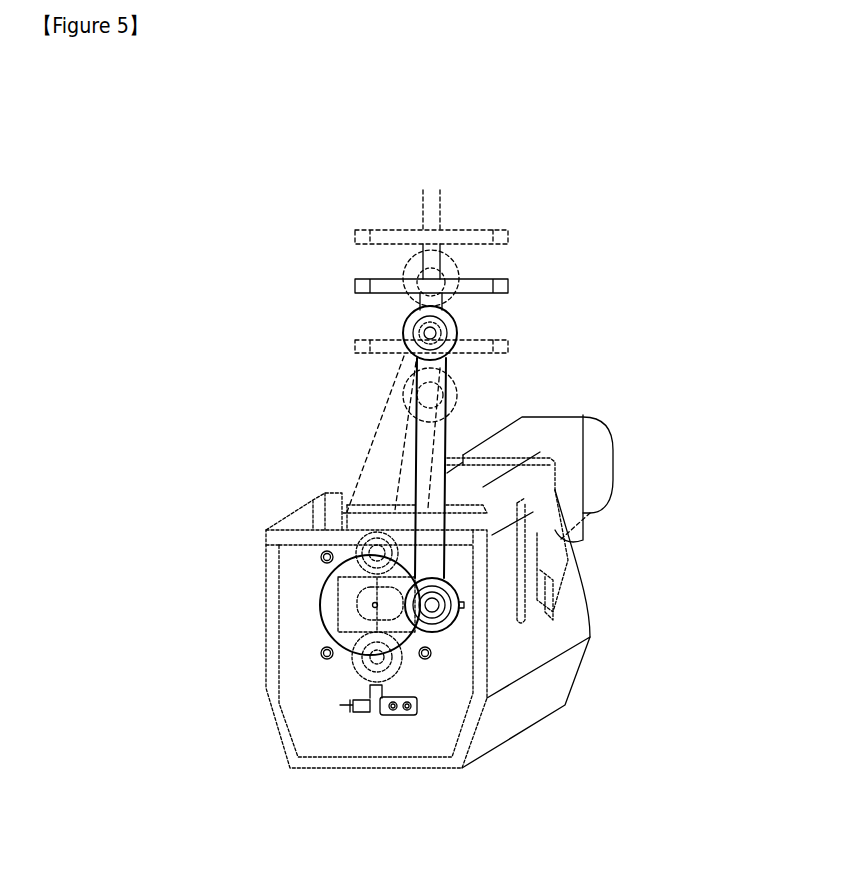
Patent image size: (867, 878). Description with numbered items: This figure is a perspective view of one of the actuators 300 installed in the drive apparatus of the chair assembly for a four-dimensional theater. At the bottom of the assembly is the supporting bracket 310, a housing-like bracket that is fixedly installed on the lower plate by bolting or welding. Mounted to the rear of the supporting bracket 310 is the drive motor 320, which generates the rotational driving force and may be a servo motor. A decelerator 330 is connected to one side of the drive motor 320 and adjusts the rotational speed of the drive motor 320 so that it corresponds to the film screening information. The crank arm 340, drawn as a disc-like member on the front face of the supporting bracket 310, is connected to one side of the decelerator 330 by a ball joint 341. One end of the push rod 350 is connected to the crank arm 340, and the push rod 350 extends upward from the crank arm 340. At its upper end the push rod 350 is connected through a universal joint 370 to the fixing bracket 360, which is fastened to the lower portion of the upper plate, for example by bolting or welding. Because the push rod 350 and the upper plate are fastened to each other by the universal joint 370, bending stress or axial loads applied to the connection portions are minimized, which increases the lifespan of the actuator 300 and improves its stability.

The actuator 300 is at (300, 148).
The supporting bracket 310 is at (518, 720).
The drive motor 320 is at (612, 452).
The decelerator 330 is at (585, 500).
The crank arm 340 is at (322, 617).
The ball joint 341 is at (337, 580).
The push rod 350 is at (447, 540).
The fixing bracket 360 is at (510, 283).
The universal joint 370 is at (405, 322).